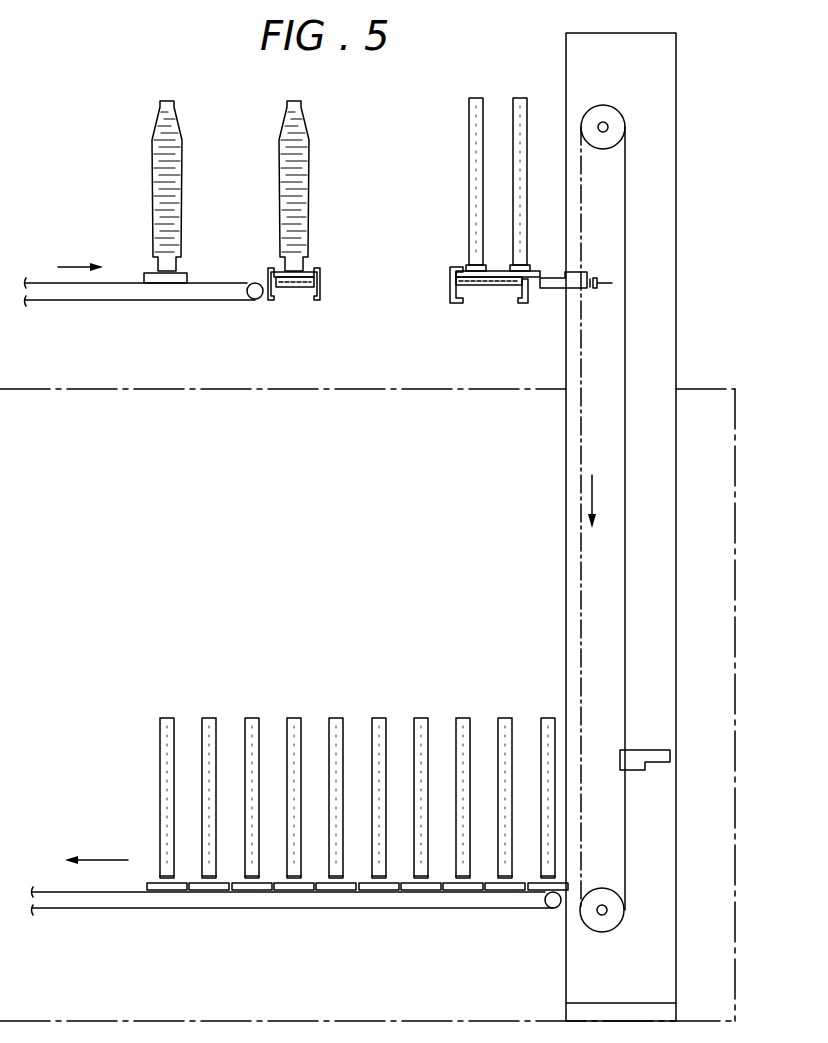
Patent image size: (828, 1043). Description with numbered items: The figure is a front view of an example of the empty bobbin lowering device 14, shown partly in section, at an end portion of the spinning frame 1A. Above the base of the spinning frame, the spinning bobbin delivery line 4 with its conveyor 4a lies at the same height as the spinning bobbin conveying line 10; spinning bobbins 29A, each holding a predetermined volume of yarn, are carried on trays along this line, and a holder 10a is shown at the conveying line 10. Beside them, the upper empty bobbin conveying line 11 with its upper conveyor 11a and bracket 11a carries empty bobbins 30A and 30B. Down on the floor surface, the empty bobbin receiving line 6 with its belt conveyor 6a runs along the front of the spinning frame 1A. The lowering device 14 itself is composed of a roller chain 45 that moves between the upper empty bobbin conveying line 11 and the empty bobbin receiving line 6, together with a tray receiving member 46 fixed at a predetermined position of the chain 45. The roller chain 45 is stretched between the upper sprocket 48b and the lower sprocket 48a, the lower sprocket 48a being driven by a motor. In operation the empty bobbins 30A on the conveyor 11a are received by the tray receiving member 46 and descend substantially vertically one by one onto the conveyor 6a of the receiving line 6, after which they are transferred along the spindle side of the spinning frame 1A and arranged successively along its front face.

The spinning frame 1A is at (362, 388).
The spinning bobbin delivery line 4 is at (121, 278).
The conveyor belt surface 4a is at (218, 283).
The empty bobbin receiving line 6 is at (315, 911).
The belt conveyor 6a is at (135, 890).
The spinning bobbin conveying line 10 is at (323, 271).
The holder cushion 10a is at (290, 298).
The upper empty bobbin conveying line 11 is at (487, 294).
The upper conveyor 11a is at (460, 268).
The empty bobbin lowering device 14 is at (684, 211).
The spinning bobbin 29A is at (170, 168).
The empty bobbin 30A is at (517, 113).
The empty tube 30B is at (473, 123).
The roller chain 45 is at (628, 363).
The tray receiving member 46 is at (556, 289).
The lower sprocket 48a is at (601, 925).
The upper sprocket 48b is at (611, 125).